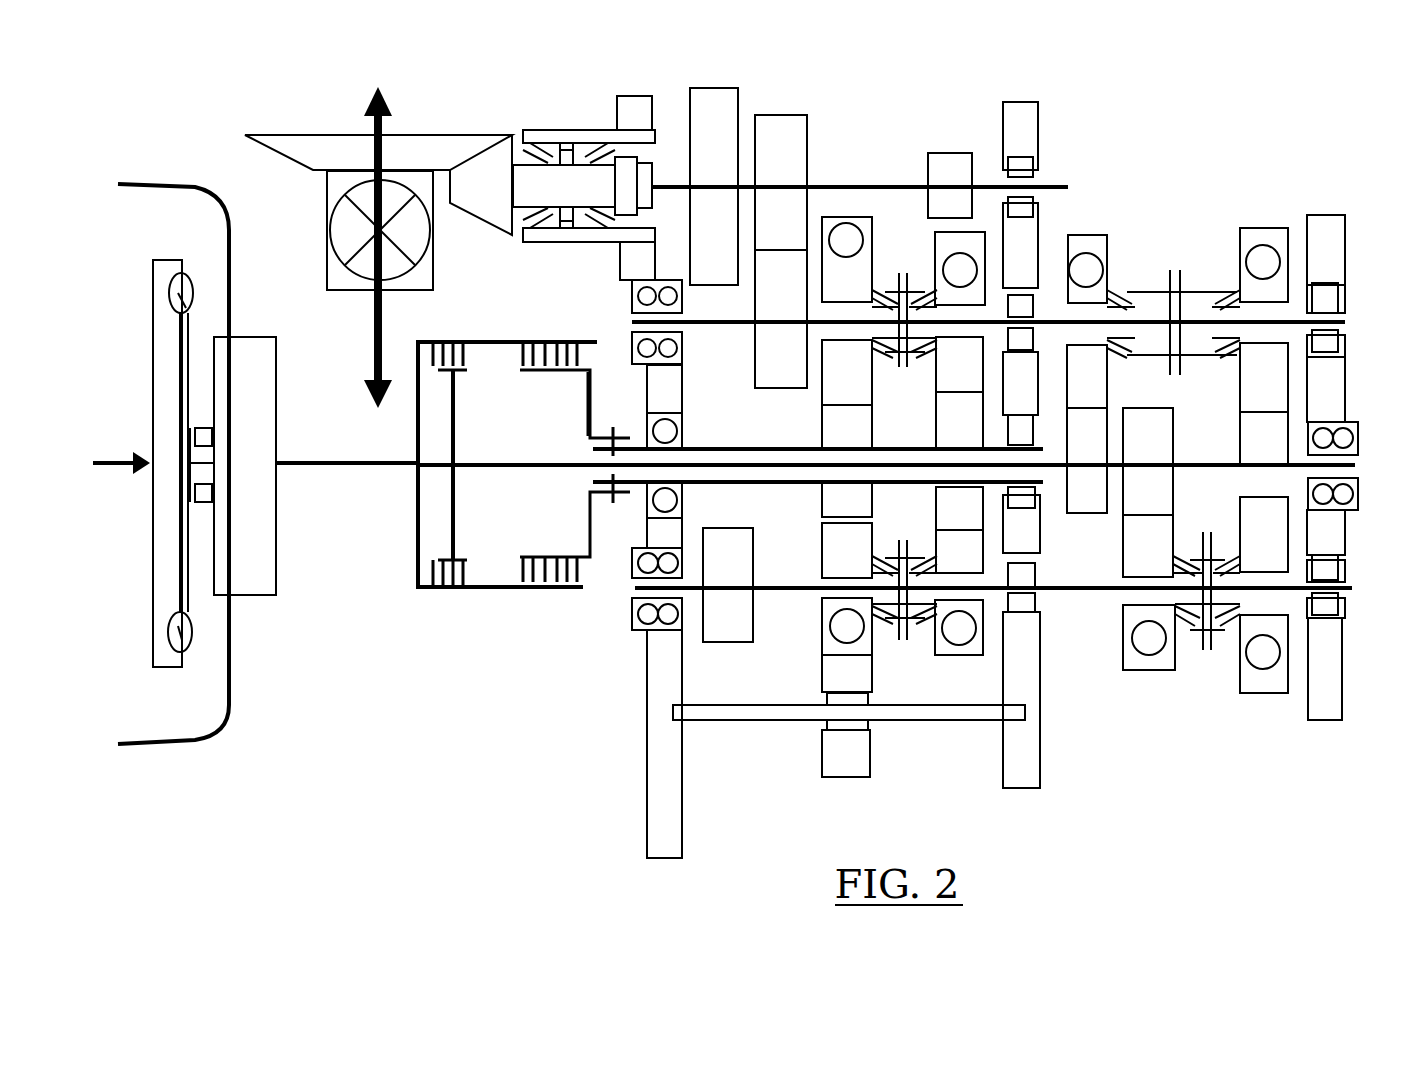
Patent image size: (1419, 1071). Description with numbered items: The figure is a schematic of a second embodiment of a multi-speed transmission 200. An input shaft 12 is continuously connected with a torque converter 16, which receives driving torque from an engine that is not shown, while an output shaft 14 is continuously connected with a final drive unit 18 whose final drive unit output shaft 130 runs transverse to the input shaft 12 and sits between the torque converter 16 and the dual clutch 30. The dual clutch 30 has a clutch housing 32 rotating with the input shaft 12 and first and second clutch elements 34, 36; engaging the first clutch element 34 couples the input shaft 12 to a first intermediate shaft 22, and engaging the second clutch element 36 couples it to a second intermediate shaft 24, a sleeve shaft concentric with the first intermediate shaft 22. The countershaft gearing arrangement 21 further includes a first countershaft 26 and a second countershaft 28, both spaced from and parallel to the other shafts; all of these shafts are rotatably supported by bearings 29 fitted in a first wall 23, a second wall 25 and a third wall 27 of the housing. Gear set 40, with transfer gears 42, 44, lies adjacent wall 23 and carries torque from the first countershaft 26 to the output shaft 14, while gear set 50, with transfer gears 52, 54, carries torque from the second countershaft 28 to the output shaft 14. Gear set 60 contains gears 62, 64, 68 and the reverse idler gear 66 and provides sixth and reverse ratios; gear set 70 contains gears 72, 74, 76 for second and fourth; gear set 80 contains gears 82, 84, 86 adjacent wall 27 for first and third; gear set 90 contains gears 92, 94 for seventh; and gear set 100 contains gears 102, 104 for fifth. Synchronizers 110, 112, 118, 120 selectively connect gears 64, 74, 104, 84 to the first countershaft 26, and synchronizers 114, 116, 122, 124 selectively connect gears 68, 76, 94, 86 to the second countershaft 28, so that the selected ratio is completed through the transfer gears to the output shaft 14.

The multi-speed transmission 200 is at (205, 140).
The input member 12 is at (316, 463).
The output member 14 is at (663, 183).
The torque converter 16 is at (153, 572).
The final drive unit 18 is at (470, 97).
The countershaft gearing arrangement 21 is at (1094, 157).
The first intermediate shaft 22 is at (492, 468).
The first support wall 23 is at (647, 672).
The second intermediate shaft 24 is at (728, 447).
The second support wall 25 is at (1025, 792).
The first countershaft 26 is at (777, 590).
The third support wall 27 is at (1317, 722).
The second countershaft 28 is at (1300, 320).
The bearings 29 is at (632, 338).
The dual clutch 30 is at (382, 570).
The clutch housing 32 is at (486, 590).
The first clutch element 34 is at (462, 372).
The second clutch element 36 is at (580, 382).
The gear set 40 is at (722, 442).
The transfer gear 42 is at (714, 186).
The transfer gear 44 is at (728, 585).
The gear set 50 is at (818, 213).
The transfer gear 52 is at (780, 299).
The transfer gear 54 is at (780, 149).
The gear set 60 is at (828, 788).
The gear 62 is at (847, 394).
The gear 64 is at (847, 530).
The idler gear 66 is at (847, 646).
The gear 68 is at (847, 259).
The gear set 70 is at (936, 465).
The gear 72 is at (959, 429).
The gear 74 is at (959, 571).
The gear 76 is at (956, 300).
The gear set 80 is at (1255, 503).
The gear 82 is at (1263, 441).
The gear 84 is at (1251, 704).
The gear 86 is at (1264, 346).
The gear set 90 is at (1111, 333).
The gear 92 is at (1086, 439).
The gear 94 is at (1087, 374).
The gear set 100 is at (1136, 586).
The gear 102 is at (1148, 492).
The gear 104 is at (1133, 687).
The synchronizer 110 is at (889, 640).
The synchronizer 112 is at (913, 545).
The synchronizer 114 is at (889, 372).
The synchronizer 116 is at (917, 280).
The synchronizer 118 is at (1186, 648).
The synchronizer 120 is at (1223, 538).
The synchronizer 122 is at (1130, 362).
The synchronizer 124 is at (1157, 280).
The final drive unit output shaft 130 is at (372, 318).